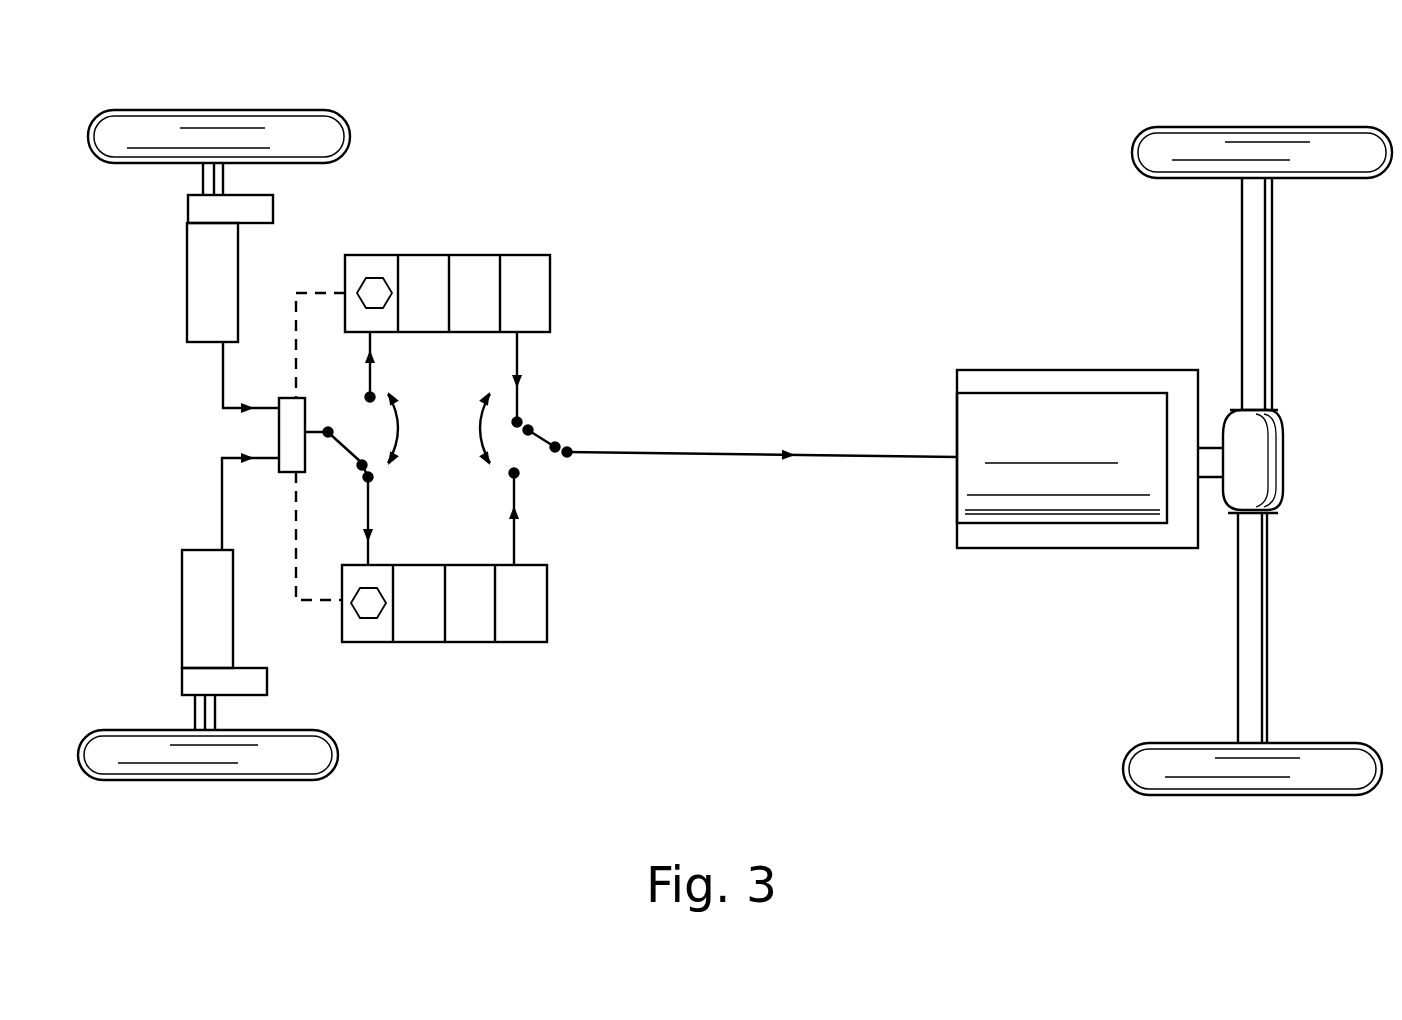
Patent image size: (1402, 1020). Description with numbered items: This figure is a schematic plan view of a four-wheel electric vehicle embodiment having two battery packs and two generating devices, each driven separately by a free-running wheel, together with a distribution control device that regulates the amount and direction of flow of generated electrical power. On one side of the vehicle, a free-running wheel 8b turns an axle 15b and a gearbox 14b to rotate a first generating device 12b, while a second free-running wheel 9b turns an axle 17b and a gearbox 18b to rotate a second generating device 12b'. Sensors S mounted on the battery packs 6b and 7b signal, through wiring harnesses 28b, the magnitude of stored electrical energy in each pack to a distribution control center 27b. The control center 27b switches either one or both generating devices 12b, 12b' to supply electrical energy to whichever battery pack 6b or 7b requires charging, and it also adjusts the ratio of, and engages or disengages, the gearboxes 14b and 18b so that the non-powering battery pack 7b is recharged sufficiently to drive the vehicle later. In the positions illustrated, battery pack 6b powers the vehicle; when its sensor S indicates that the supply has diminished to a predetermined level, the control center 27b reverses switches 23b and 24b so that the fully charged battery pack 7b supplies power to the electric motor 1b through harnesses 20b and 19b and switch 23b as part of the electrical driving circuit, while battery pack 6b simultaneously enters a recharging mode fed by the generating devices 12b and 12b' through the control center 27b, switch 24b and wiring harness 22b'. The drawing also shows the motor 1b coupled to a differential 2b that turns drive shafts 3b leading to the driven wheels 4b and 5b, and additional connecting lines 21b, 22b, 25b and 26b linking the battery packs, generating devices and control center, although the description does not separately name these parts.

The motor 1b is at (1057, 418).
The differential 2b is at (1255, 468).
The drive shaft 3b is at (1255, 310).
The rear wheel 4b is at (1282, 163).
The rear wheel 5b is at (1280, 772).
The battery pack 6b is at (512, 272).
The battery pack 7b is at (522, 625).
The free-running wheel 8b is at (290, 128).
The free-running wheel 9b is at (297, 752).
The generating device 12b is at (171, 292).
The generating device 12b' is at (166, 598).
The gearbox 14b is at (190, 212).
The axle 15b is at (207, 175).
The axle 17b is at (198, 717).
The gearbox 18b is at (185, 680).
The harness 19b is at (830, 450).
The harness 20b is at (519, 538).
The supply line 21b is at (524, 362).
The supply line 22b is at (426, 521).
The wiring harness 22b' is at (429, 400).
The switch 23b is at (523, 451).
The switch 24b is at (366, 447).
The hydraulic line 25b is at (218, 410).
The hydraulic line 26b is at (220, 488).
The distribution control center 27b is at (287, 455).
The wiring harness 28b is at (294, 302).
The sensor S is at (373, 285).